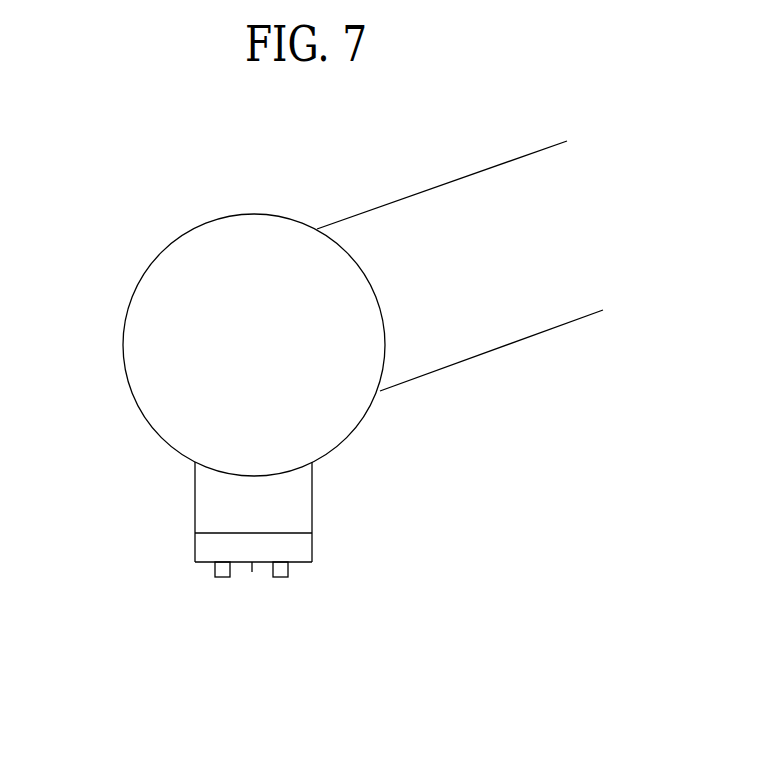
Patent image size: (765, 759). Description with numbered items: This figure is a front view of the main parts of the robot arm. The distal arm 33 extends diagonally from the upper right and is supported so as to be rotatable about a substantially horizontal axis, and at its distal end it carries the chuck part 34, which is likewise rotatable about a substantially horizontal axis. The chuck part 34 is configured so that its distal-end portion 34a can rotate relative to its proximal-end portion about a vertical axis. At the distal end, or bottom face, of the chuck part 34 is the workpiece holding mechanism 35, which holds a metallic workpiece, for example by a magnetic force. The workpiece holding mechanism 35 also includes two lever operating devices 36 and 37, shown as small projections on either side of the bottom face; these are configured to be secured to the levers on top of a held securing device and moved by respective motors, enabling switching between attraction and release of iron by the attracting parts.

The distal arm 33 is at (402, 198).
The chuck part 34 is at (195, 505).
The distal-end portion 34a is at (312, 546).
The workpiece holding mechanism 35 is at (252, 572).
The lever operating device 36 is at (222, 578).
The lever operating device 37 is at (279, 578).